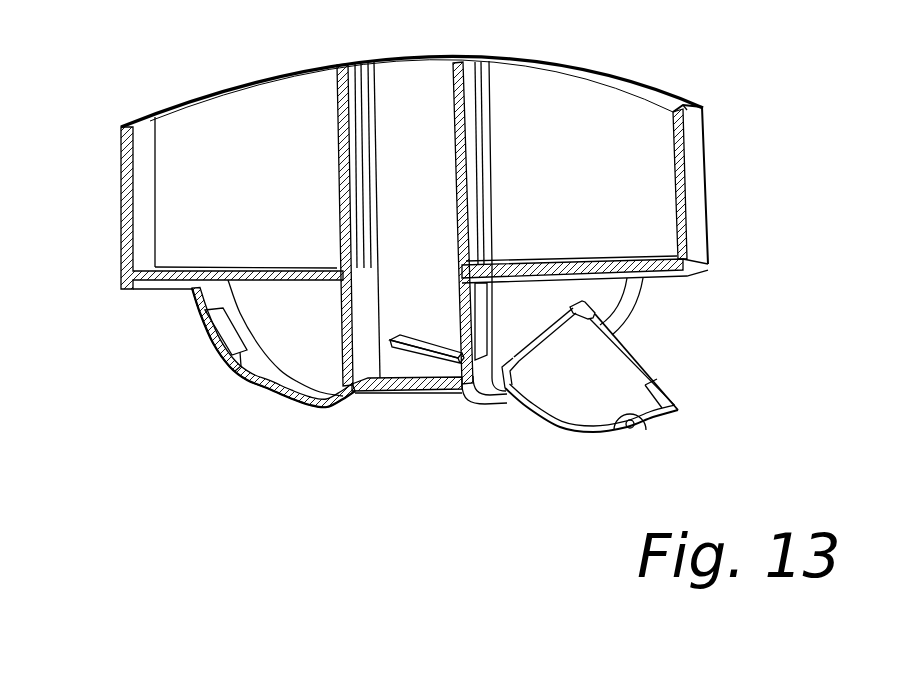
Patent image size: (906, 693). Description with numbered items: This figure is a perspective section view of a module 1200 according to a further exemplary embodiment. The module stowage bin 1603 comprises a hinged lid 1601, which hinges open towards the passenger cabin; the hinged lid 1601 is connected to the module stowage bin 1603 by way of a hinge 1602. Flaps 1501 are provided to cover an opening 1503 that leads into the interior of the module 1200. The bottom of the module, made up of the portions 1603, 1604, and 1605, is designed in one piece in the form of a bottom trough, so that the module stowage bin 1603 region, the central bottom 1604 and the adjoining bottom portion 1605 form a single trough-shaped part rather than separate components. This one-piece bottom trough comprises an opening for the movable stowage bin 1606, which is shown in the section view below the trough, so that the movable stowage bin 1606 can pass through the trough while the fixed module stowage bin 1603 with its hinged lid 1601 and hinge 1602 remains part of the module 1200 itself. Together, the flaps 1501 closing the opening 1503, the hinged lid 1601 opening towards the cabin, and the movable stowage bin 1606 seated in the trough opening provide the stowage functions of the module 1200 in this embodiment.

The module 1200 is at (145, 93).
The flaps 1501 is at (422, 342).
The opening 1503 is at (480, 313).
The hinged lid 1601 is at (213, 324).
The hinge 1602 is at (240, 356).
The module stowage bin 1603 is at (287, 398).
The bottom 1604 is at (440, 393).
The bottom 1605 is at (490, 405).
The movable stowage bin 1606 is at (635, 381).